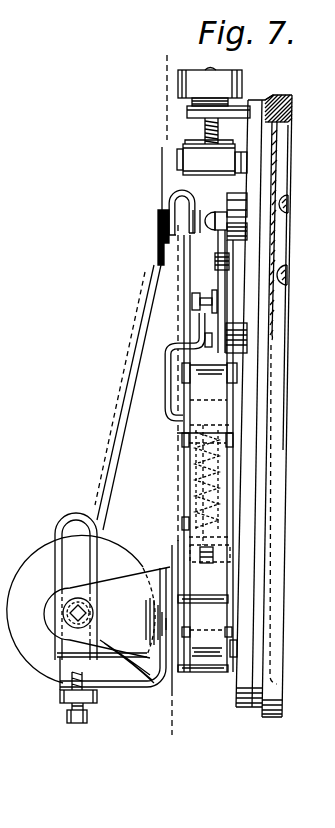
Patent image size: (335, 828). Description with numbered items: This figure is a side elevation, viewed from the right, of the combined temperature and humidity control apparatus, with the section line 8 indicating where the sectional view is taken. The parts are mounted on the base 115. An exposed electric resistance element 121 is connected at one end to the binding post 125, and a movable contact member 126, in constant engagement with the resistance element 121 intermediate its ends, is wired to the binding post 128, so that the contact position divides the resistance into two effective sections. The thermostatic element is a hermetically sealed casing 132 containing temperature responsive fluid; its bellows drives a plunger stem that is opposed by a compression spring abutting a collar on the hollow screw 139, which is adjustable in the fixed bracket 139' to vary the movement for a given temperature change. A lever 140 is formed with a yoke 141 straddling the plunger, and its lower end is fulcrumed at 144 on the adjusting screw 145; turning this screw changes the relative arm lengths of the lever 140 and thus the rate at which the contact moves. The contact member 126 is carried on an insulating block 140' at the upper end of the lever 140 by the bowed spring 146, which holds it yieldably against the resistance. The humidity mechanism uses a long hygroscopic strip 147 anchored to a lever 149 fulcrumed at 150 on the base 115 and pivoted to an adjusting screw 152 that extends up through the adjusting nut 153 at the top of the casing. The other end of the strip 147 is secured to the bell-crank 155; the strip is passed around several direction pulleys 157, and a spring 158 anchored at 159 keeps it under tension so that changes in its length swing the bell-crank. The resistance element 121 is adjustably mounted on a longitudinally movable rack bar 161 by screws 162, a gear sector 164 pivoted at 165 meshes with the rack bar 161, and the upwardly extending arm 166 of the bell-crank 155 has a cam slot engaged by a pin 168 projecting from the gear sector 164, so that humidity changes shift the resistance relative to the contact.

The section line 8- 8 is at (174, 53).
The base 115 is at (291, 98).
The electric resistance element 121 is at (213, 211).
The binding post 125 is at (287, 213).
The contact member 126 is at (203, 215).
The binding post 128 is at (287, 278).
The hermetically sealed casing 132 is at (38, 561).
The screw 139 is at (50, 613).
The fixed bracket 139' is at (111, 641).
The lever 140 is at (110, 397).
The insulating block 140' is at (137, 213).
The yoke 141 is at (56, 534).
The fulcrum 144 is at (60, 691).
The adjusting screw 145 is at (67, 712).
The bowed spring 146 is at (175, 192).
The hygroscopic strip 147 is at (188, 521).
The lever 149 is at (176, 137).
The fulcrum 150 is at (177, 157).
The adjusting screw 152 is at (205, 130).
The adjusting nut 153 is at (232, 75).
The bell-crank 155 is at (190, 537).
The direction pulleys 157 is at (182, 359).
The spring 158 is at (195, 480).
The anchor 159 is at (182, 438).
The rack bar 161 is at (219, 235).
The screws 162 is at (247, 234).
The gear sector 164 is at (216, 264).
The pivot 165 is at (273, 341).
The arm 166 is at (164, 345).
The pin 168 is at (194, 302).